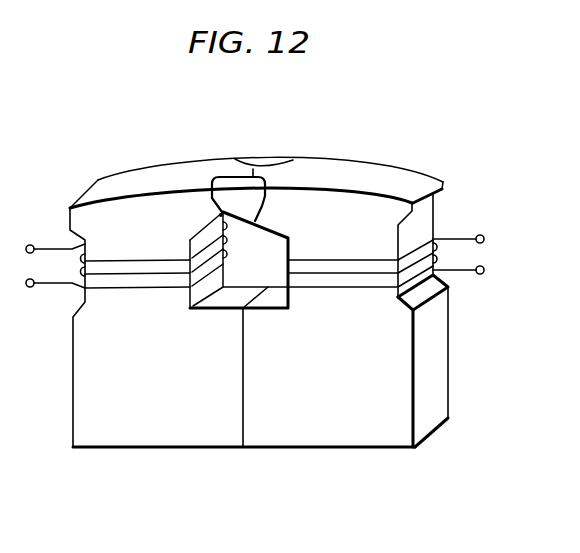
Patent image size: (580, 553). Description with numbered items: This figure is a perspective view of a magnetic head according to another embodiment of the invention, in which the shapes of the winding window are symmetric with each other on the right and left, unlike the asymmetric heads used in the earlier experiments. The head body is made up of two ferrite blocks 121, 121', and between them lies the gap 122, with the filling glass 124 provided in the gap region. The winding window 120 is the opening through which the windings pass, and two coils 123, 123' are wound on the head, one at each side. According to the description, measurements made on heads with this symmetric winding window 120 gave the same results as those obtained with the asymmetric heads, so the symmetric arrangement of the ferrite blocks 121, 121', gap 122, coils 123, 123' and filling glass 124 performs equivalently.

The winding window 120 is at (237, 268).
The ferrite block 121 is at (242, 354).
The ferrite block 121' is at (380, 345).
The gap 122 is at (256, 172).
The coil 123 is at (103, 298).
The coil 123' is at (401, 278).
The filling glass 124 is at (256, 205).